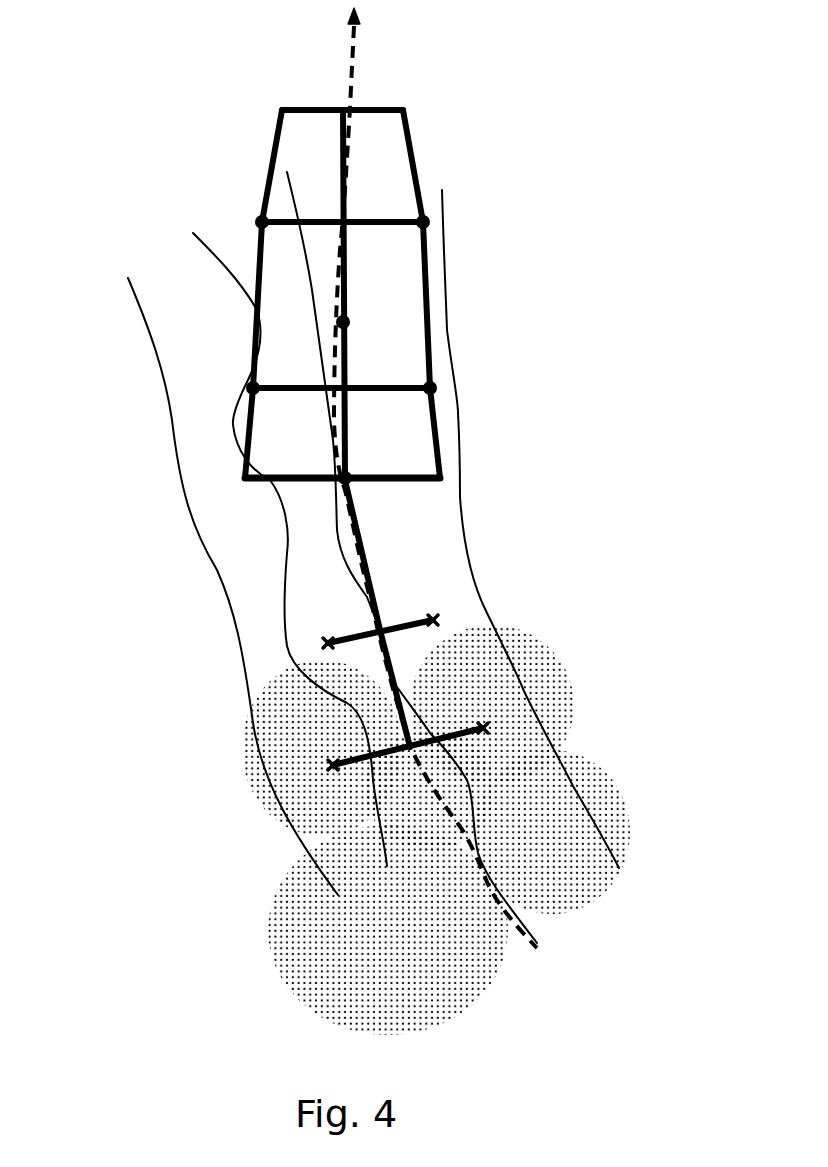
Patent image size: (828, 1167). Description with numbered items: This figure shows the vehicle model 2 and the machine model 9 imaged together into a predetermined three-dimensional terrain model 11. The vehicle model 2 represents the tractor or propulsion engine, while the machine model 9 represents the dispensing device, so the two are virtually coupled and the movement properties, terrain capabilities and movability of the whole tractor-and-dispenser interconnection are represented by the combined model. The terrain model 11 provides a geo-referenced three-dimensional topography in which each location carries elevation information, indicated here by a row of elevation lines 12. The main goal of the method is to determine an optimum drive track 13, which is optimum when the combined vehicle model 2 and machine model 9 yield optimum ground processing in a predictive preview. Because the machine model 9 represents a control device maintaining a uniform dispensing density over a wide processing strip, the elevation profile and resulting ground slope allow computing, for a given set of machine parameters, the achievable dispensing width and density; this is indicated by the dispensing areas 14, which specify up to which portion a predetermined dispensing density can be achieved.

The vehicle model 2 is at (425, 157).
The machine model 9 is at (395, 592).
The three-dimensional terrain model 11 is at (165, 240).
The elevation lines 12 is at (167, 386).
The drive track 13 is at (350, 50).
The dispensing areas 14 is at (207, 610).